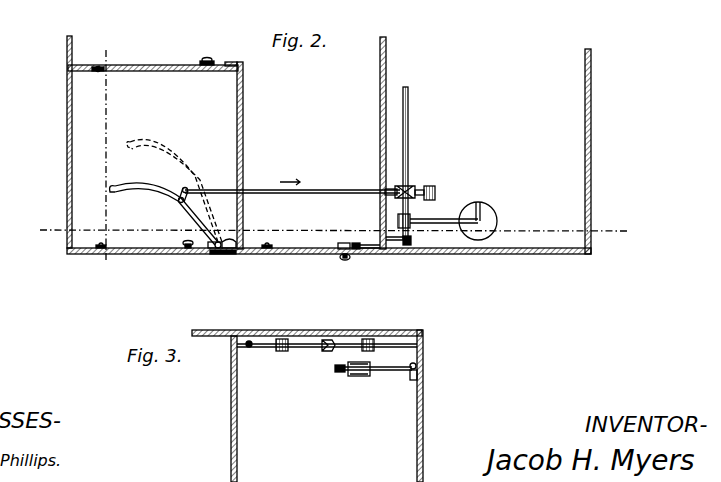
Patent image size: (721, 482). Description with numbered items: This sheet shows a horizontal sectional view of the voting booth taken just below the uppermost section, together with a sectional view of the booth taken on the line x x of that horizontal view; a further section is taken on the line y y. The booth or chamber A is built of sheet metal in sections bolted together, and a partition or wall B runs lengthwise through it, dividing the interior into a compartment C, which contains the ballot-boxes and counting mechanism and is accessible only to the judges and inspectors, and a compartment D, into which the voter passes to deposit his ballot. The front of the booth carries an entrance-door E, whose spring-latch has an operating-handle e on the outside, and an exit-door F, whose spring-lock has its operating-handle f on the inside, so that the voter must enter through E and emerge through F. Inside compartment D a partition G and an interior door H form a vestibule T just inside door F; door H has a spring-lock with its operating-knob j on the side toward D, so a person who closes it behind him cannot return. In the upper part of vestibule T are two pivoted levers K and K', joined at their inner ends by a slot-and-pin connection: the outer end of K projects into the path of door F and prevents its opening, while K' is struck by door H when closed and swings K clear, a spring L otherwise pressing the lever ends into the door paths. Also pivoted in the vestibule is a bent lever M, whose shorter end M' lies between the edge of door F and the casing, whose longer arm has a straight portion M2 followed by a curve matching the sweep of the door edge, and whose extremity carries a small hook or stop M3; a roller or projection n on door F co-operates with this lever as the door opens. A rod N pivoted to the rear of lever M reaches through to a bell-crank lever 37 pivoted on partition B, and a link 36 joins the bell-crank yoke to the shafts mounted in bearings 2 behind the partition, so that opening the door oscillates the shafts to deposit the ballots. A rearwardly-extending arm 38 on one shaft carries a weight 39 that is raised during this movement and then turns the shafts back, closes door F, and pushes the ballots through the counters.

In FIG. 2, the booth or chamber A is at (595, 151).
In FIG. 2, the partition or wall B is at (388, 60).
In FIG. 2, the compartment C is at (486, 96).
In FIG. 2, the compartment D is at (321, 106).
In FIG. 2, the entrance-door E is at (321, 256).
In FIG. 2, the operating-handle e is at (349, 259).
In FIG. 2, the exit-door F is at (163, 256).
In FIG. 3, the exit-door F is at (424, 390).
In FIG. 2, the operating-handle f is at (184, 242).
In FIG. 2, the partition G is at (246, 133).
In FIG. 2, the interior door H is at (170, 65).
In FIG. 3, the interior door H is at (238, 391).
In FIG. 2, the operating-knob j is at (208, 58).
In FIG. 3, the lever K is at (362, 351).
In FIG. 3, the lever K' is at (280, 354).
In FIG. 2, the spring L is at (409, 136).
In FIG. 3, the spring L is at (250, 348).
In FIG. 2, the bent lever M is at (164, 209).
In FIG. 2, the shorter end of lever M M' is at (223, 259).
In FIG. 2, the straight portion of lever M M2 is at (177, 206).
In FIG. 3, the straight portion of lever M M2 is at (382, 372).
In FIG. 2, the hook or stop M3 is at (170, 191).
In FIG. 3, the hook or stop M3 is at (340, 373).
In FIG. 2, the rod N is at (292, 195).
In FIG. 2, the roller or projection n is at (210, 252).
In FIG. 3, the roller or projection n is at (420, 364).
In FIG. 2, the vestibule T is at (176, 102).
In FIG. 3, the vestibule T is at (314, 392).
In FIG. 2, the section line x is at (104, 159).
In FIG. 2, the section line y is at (332, 233).
In FIG. 2, the bearings 2 is at (403, 241).
In FIG. 2, the link or rod 36 is at (437, 187).
In FIG. 2, the bell-crank lever 37 is at (408, 185).
In FIG. 2, the rearwardly-extending arm 38 is at (441, 220).
In FIG. 2, the weight 39 is at (490, 212).